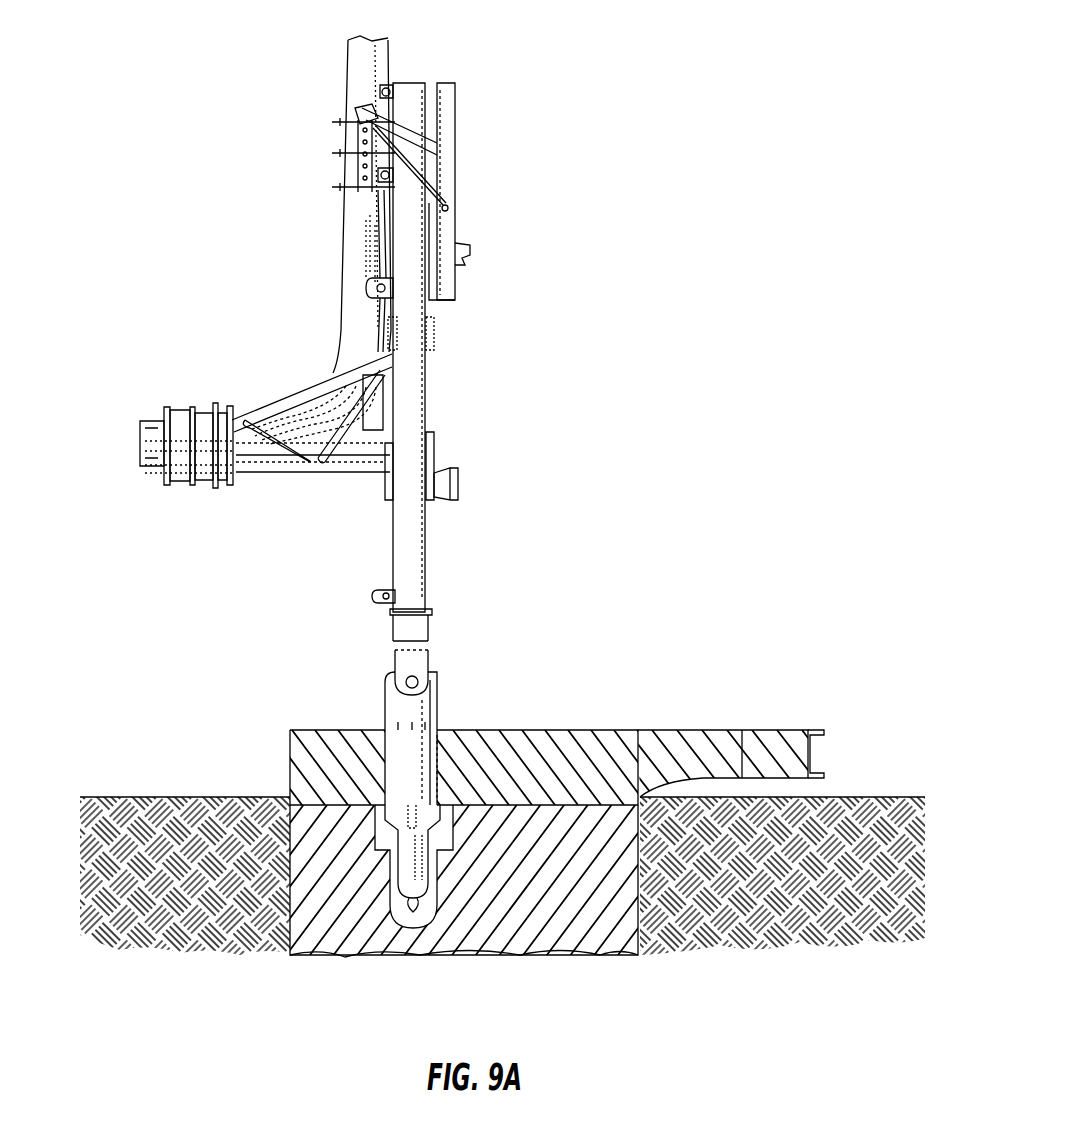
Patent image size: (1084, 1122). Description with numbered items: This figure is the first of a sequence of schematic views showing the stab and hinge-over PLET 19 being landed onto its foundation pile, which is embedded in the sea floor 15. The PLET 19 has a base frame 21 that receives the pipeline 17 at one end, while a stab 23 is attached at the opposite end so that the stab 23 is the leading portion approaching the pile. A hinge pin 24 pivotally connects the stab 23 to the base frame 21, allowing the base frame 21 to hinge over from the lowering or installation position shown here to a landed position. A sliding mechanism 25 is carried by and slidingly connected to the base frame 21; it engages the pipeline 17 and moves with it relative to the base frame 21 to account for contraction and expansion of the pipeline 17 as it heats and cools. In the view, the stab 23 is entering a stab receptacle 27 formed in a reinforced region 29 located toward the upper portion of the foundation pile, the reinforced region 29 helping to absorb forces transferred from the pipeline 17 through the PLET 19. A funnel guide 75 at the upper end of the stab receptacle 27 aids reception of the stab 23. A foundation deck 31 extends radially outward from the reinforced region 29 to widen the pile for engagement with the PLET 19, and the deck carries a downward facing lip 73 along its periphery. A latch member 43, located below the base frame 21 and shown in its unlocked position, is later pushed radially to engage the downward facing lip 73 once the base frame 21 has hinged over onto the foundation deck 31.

The sea floor 15 is at (162, 797).
The pipeline 17 is at (347, 66).
The stab and hinge-over PLET 19 is at (628, 353).
The base frame 21 is at (410, 83).
The stab 23 is at (386, 715).
The hinge pin 24 is at (408, 680).
The sliding mechanism 25 is at (458, 115).
The stab receptacle 27 is at (438, 760).
The reinforced region 29 is at (310, 775).
The foundation deck 31 is at (814, 757).
The latch member 43 is at (473, 258).
The downward facing lip 73 is at (814, 737).
The funnel guide 75 is at (437, 762).